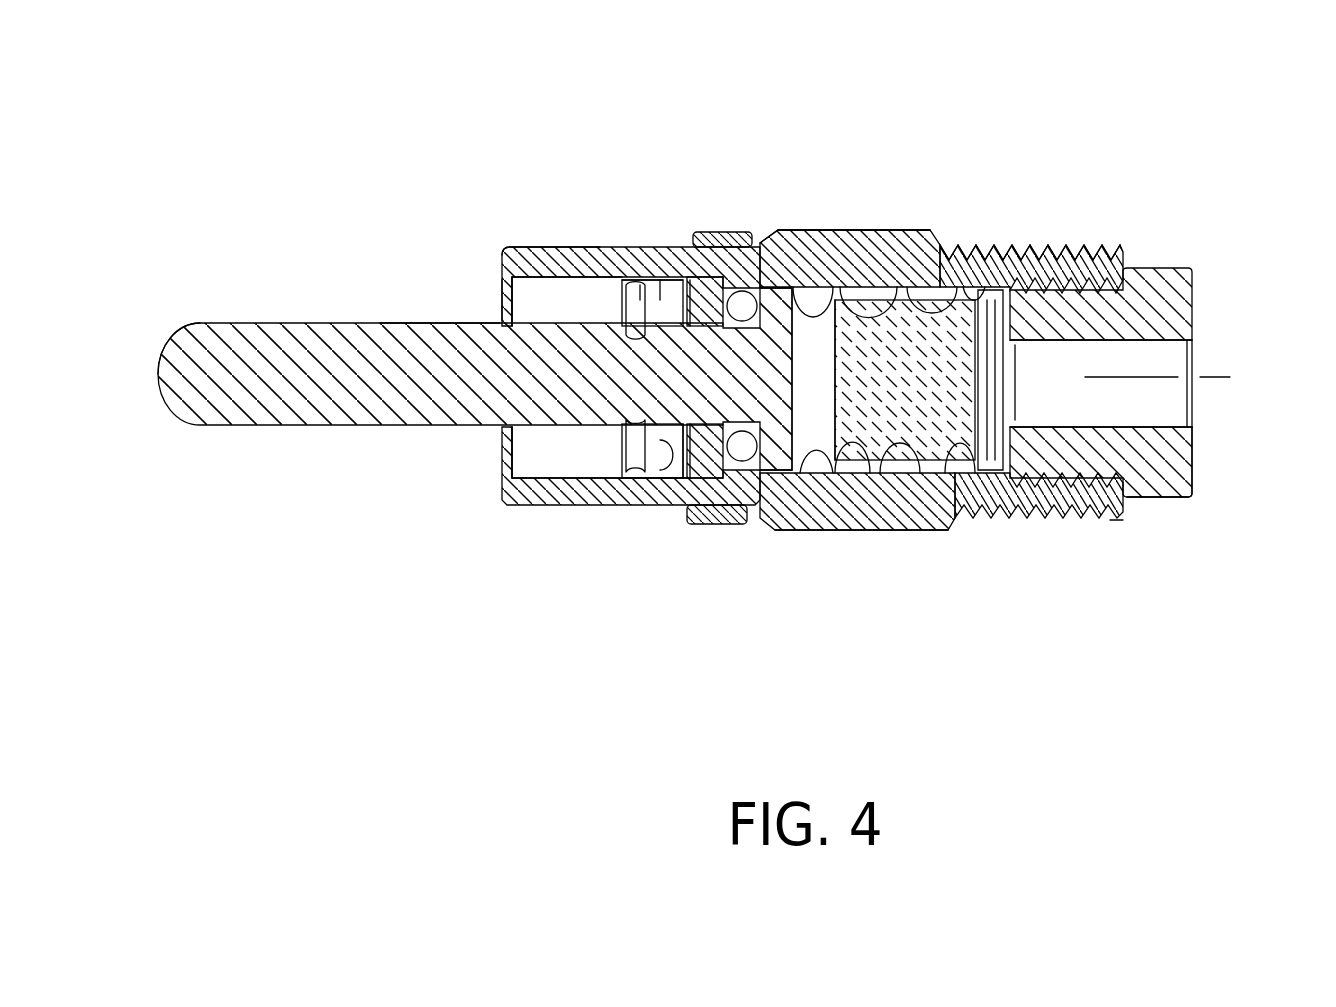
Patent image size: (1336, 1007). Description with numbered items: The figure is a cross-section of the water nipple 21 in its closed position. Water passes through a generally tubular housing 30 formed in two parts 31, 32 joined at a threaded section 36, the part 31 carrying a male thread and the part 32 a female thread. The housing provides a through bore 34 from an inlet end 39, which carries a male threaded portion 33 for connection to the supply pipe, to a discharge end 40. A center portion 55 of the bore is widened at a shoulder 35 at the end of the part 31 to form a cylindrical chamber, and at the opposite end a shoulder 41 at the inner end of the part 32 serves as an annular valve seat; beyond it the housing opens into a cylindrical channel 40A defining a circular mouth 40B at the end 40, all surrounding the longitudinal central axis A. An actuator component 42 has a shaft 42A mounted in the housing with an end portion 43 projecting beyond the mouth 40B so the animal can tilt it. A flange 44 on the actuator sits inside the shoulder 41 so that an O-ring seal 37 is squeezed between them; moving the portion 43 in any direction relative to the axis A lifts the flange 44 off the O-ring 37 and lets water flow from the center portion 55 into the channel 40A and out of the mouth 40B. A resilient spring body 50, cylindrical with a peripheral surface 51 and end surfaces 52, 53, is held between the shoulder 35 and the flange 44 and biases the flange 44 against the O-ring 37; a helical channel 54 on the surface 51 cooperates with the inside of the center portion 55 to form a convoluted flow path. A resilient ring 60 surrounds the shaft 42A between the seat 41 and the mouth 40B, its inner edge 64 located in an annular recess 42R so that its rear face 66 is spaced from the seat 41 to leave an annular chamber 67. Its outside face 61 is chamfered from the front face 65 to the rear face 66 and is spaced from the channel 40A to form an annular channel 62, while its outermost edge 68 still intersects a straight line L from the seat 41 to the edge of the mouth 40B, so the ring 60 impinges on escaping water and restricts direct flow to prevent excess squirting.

The water nipple 21 is at (886, 193).
The housing 30 is at (810, 527).
The housing part 31 is at (1152, 307).
The housing part 32 is at (895, 240).
The male threaded portion 33 is at (1027, 247).
The through bore 34 is at (888, 527).
The shoulder 35 is at (1022, 522).
The threaded section 36 is at (1057, 250).
The O-ring seal 37 is at (738, 300).
The inlet end 39 is at (1203, 468).
The discharge end 40 is at (498, 498).
The cylindrical channel 40A is at (560, 282).
The circular mouth 40B is at (500, 262).
The shoulder / valve seat 41 is at (700, 280).
The actuator component 42 is at (350, 402).
The shaft 42A is at (593, 292).
The annular recess 42R is at (640, 300).
The end portion 43 is at (215, 345).
The flange 44 is at (766, 500).
The resilient spring body 50 is at (860, 410).
The peripheral surface 51 is at (862, 300).
The end surface 52 is at (674, 495).
The end surface 53 is at (1015, 397).
The helical channel 54 is at (972, 520).
The center portion of the bore 55 is at (817, 300).
The resilient ring 60 is at (595, 500).
The outside face 61 is at (605, 492).
The annular channel 62 is at (590, 471).
The inner edge 64 is at (630, 326).
The front face 65 is at (630, 455).
The rear face 66 is at (648, 290).
The annular chamber 67 is at (660, 490).
The outermost edge 68 is at (640, 292).
The straight line L is at (477, 263).
The longitudinal central axis A is at (1220, 373).